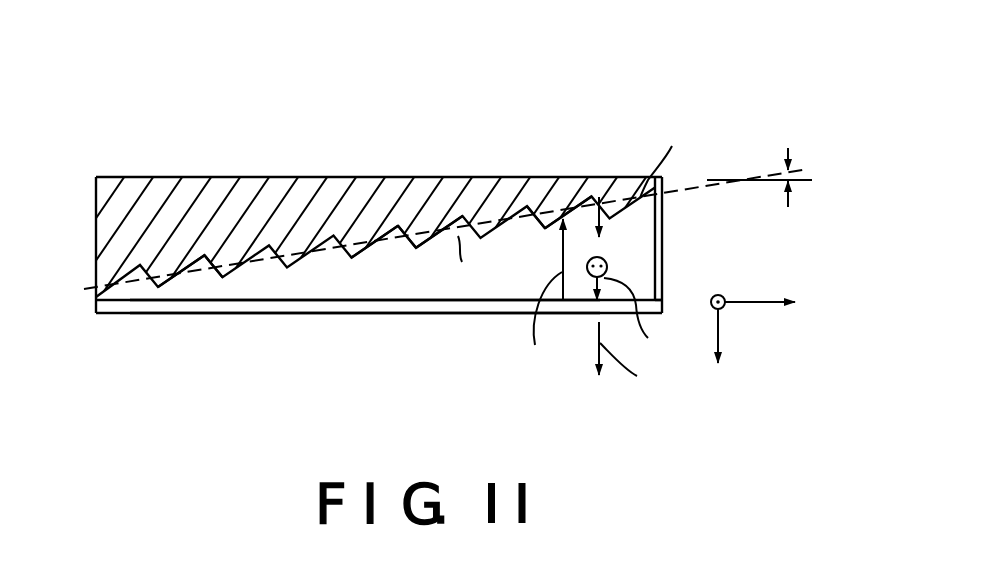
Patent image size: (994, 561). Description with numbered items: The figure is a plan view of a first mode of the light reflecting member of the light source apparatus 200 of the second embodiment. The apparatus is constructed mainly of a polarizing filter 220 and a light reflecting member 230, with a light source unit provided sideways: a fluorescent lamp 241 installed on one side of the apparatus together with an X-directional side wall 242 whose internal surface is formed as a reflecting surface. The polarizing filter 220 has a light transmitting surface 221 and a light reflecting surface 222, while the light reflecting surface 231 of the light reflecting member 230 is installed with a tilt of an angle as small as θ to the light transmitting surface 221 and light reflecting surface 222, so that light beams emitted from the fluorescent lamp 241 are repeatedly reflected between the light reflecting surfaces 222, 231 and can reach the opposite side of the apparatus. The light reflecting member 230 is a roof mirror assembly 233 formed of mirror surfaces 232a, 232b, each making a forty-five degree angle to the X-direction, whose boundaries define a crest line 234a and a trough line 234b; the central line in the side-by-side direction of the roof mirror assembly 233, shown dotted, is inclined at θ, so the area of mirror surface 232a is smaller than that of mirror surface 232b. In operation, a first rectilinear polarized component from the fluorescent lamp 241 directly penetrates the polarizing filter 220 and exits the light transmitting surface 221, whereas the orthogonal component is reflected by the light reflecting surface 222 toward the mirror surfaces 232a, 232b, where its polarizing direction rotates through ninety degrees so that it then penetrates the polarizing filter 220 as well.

The light source apparatus 200 is at (452, 38).
The polarizing filter 220 is at (180, 305).
The light transmitting surface 221 is at (277, 316).
The light reflecting surface 222 is at (394, 297).
The light reflecting member 230 is at (191, 202).
The light reflecting surface 231 is at (432, 232).
The mirror surface 232a is at (353, 247).
The mirror surface 232b is at (372, 249).
The roof mirror assembly 233 is at (470, 116).
The crest line 234a is at (563, 212).
The trough line 234b is at (534, 214).
The fluorescent lamp 241 is at (604, 262).
The X-directional side wall 242 is at (663, 214).